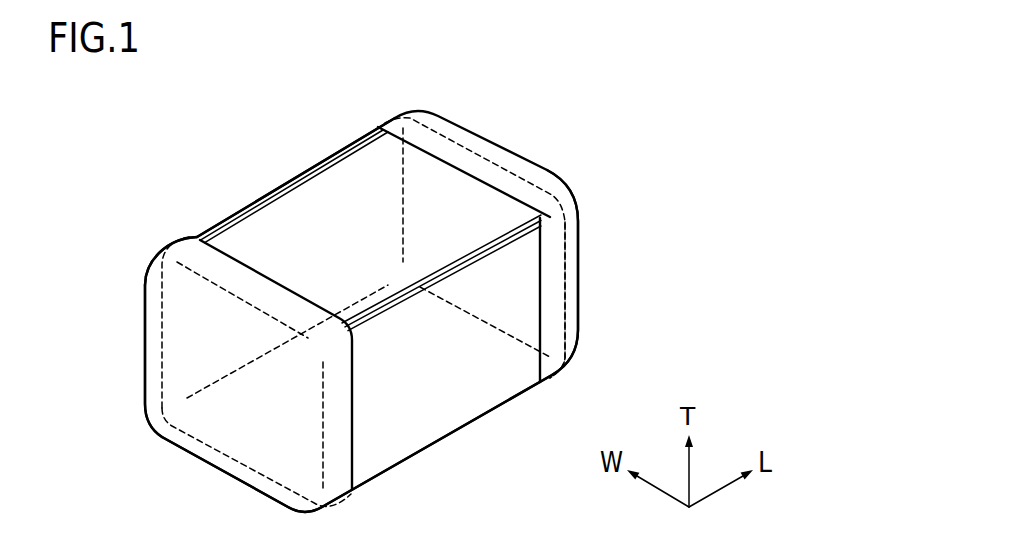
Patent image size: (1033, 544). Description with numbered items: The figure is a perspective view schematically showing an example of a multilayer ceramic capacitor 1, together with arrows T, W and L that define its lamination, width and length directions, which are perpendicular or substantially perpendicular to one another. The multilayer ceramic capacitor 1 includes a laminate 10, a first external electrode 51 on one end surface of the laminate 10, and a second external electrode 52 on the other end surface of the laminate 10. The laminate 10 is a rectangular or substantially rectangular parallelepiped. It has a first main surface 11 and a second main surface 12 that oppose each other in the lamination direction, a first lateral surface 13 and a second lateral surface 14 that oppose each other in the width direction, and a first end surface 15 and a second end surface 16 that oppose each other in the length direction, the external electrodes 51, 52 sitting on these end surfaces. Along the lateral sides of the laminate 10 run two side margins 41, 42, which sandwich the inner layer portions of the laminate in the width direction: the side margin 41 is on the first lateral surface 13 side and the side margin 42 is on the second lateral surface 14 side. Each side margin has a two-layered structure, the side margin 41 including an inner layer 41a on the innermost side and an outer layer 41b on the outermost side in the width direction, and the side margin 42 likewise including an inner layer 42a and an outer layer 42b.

The multilayer ceramic capacitor 1 is at (82, 154).
The laminate 10 is at (366, 157).
The first main surface 11 is at (390, 215).
The second main surface 12 is at (375, 438).
The first lateral surface 13 is at (450, 390).
The second lateral surface 14 is at (328, 222).
The first end surface 15 is at (238, 422).
The second end surface 16 is at (475, 207).
The side margin 41 is at (664, 208).
The inner layer 41a is at (547, 218).
The outer layer 41b is at (490, 249).
The side margin 42 is at (213, 141).
The inner layer 42a is at (252, 206).
The outer layer 42b is at (210, 229).
The first external electrode 51 is at (153, 378).
The second external electrode 52 is at (578, 298).